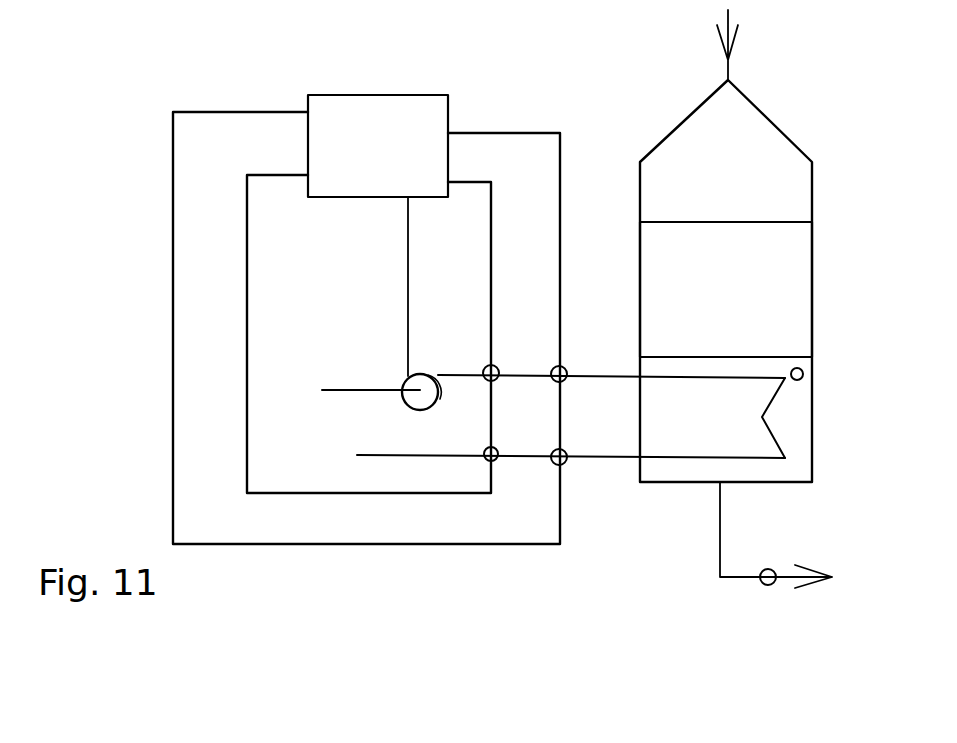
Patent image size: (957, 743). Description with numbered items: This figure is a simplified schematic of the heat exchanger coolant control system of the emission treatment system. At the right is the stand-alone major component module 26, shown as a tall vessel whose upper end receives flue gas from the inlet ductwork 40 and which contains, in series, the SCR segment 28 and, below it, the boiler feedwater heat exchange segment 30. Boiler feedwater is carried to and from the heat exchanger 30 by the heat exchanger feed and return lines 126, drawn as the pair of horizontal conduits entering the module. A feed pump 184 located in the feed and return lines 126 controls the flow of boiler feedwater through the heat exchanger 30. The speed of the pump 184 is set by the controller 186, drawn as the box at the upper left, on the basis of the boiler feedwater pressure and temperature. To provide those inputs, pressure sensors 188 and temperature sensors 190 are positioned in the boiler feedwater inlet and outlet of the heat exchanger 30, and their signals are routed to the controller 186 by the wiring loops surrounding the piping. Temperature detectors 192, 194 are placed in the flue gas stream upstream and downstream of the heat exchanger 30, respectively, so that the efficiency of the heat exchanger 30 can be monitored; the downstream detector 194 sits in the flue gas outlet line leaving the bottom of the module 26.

The major component module 26 is at (632, 108).
The SCR segment 28 is at (806, 275).
The boiler feedwater heat exchange segment 30 is at (806, 420).
The inlet ductwork 40 is at (730, 12).
The heat exchanger feed and return lines 126 is at (360, 453).
The feed pump 184 is at (405, 384).
The controller 186 is at (360, 94).
The pressure sensors 188 is at (486, 385).
The temperature sensors 190 is at (556, 388).
The temperature detector 192 is at (804, 374).
The temperature detector 194 is at (758, 590).